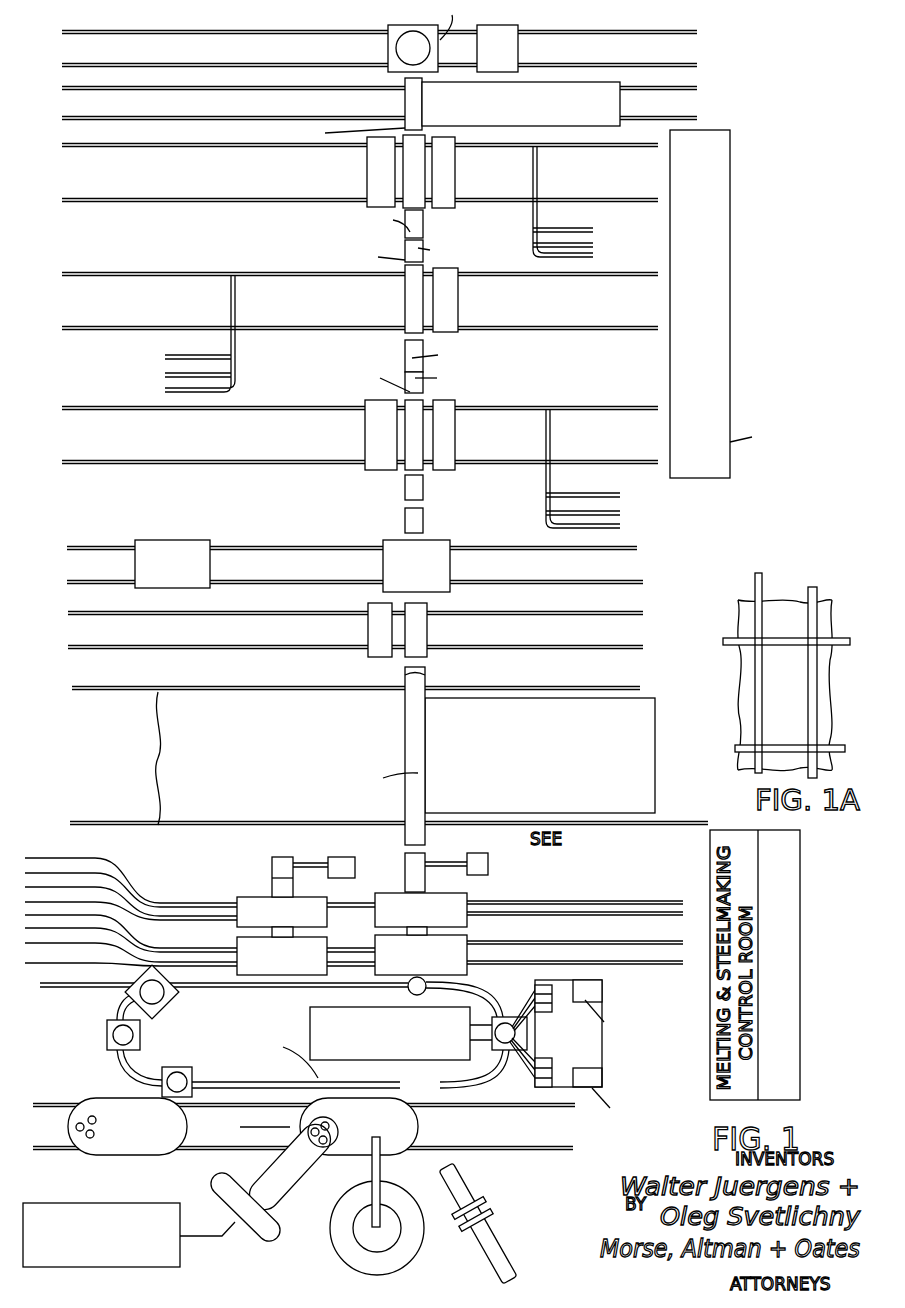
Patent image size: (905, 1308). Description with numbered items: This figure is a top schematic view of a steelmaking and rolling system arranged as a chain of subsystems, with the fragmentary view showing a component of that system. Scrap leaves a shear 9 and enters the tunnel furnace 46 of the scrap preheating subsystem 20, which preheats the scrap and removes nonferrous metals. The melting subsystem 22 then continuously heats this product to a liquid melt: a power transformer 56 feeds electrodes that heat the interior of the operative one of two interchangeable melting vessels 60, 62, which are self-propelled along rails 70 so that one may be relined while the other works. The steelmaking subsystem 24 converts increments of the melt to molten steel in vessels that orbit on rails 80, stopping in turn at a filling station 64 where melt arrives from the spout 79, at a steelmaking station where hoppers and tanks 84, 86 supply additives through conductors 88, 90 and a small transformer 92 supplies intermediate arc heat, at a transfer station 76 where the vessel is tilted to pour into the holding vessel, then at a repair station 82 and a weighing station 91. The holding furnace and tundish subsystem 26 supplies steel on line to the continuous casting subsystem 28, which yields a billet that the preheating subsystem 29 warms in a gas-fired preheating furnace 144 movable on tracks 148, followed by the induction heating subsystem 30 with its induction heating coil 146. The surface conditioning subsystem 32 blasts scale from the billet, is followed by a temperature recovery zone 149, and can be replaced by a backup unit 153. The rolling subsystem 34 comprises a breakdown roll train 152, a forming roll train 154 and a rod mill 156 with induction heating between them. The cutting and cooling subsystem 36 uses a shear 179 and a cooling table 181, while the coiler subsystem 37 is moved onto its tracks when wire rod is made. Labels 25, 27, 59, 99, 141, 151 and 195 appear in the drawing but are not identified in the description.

The shear 9 is at (462, 1212).
The subsystem for preheating scrap 20 is at (327, 1259).
The subsystem for continuously heating to a liquid melt 22 is at (258, 1164).
The subsystem for converting melt to molten steel 24 is at (262, 1015).
The computer 25 is at (600, 994).
The holding furnace and tundish subsystem 26 is at (470, 940).
The rolling computer 27 is at (724, 455).
The continuous casting subsystem 28 is at (400, 864).
The billet preheating subsystem 29 is at (441, 736).
The induction heating subsystem 30 is at (344, 668).
The surface conditioning subsystem 32 is at (336, 524).
The rolling subsystem 34 is at (91, 397).
The cutting and cooling subsystem 36 is at (375, 107).
The coiler subsystem 37 is at (385, 53).
The furnace 46 is at (407, 1253).
The power transformer 56 is at (158, 1204).
The electrode assembly 59 is at (92, 1118).
The melting vessel 60 is at (367, 1156).
The melting vessel 62 is at (141, 1146).
The filling station 64 is at (395, 1106).
The tracks 70 is at (303, 1138).
The transfer station 76 is at (410, 993).
The spout 79 is at (510, 1052).
The rails 80 is at (150, 1074).
The repair station 82 is at (125, 989).
The hopper or tank 84 is at (540, 1056).
The hopper or tank 86 is at (540, 1013).
The conductor 88 is at (528, 1065).
The conductor 90 is at (522, 1012).
The weighing station 91 is at (107, 1029).
The transformer 92 is at (318, 1022).
The transfer station 99 is at (170, 1069).
The ladle station 141 is at (239, 887).
The preheating furnace 144 is at (410, 730).
The induction heating coil 146 is at (420, 640).
The tracks 148 is at (389, 756).
The temperature recovery zone 149 is at (410, 520).
The conveyor 151 is at (618, 552).
The breakdown roll train 152 is at (410, 442).
The backup unit 153 is at (187, 548).
The forming roll train 154 is at (410, 300).
The rod mill 156 is at (416, 183).
The shear 179 is at (430, 130).
The cooling table 181 is at (592, 112).
The preheating furnace 195 is at (650, 768).